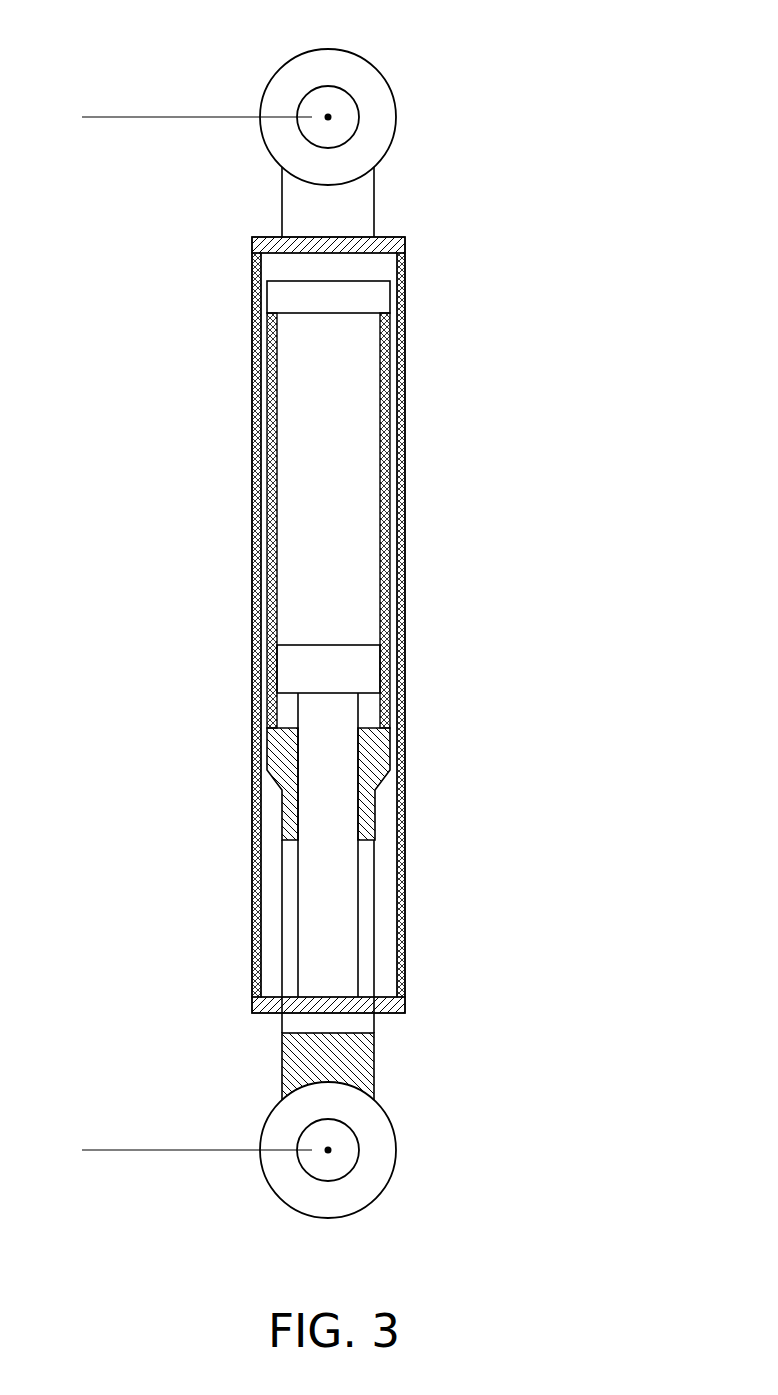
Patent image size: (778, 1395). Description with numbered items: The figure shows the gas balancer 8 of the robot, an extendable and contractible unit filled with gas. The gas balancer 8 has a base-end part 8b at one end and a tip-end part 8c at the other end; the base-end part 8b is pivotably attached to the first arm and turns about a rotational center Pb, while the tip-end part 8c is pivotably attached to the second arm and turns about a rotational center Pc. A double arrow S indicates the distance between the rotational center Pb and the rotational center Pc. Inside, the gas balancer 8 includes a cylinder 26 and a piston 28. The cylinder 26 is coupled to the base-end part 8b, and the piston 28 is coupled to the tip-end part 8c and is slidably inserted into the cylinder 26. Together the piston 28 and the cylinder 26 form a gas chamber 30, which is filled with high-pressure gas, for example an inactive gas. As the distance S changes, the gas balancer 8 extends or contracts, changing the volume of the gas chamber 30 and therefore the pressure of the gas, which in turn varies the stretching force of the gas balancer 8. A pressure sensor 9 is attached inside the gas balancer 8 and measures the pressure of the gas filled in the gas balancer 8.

The gas balancer 8 is at (396, 609).
The base-end part 8b is at (375, 1118).
The tip-end part 8c is at (367, 78).
The rotational center of the base-end part Pb is at (337, 1144).
The rotational center of the tip-end part Pc is at (337, 111).
The pressure sensor 9 is at (360, 298).
The cylinder 26 is at (392, 423).
The piston 28 is at (355, 665).
The gas chamber 30 is at (360, 514).
The distance S is at (103, 117).